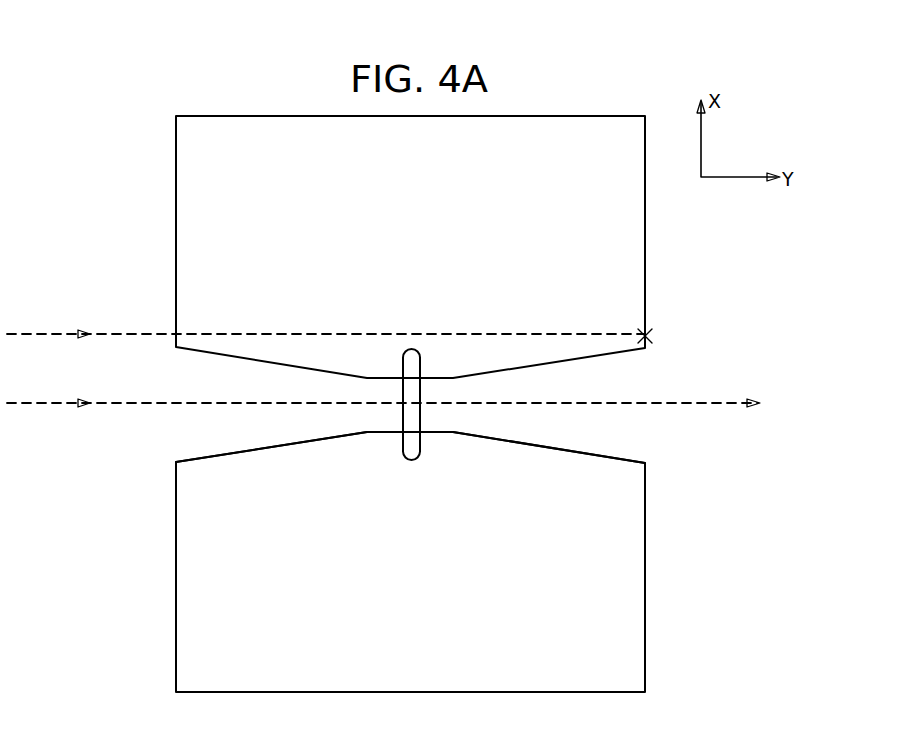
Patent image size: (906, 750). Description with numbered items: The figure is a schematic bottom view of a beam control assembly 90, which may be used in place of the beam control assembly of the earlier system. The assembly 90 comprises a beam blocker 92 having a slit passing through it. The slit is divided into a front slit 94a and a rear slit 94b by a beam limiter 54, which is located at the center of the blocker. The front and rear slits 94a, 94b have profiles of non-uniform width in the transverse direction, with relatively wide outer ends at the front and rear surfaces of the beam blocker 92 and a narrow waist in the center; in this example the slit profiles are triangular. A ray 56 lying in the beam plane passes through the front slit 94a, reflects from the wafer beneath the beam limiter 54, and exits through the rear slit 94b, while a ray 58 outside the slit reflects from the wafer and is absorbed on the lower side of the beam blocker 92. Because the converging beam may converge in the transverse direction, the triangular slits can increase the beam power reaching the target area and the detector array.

The beam control assembly 90 is at (150, 70).
The beam blocker 92 is at (175, 558).
The front slit 94a is at (210, 428).
The rear slit 94b is at (613, 435).
The beam limiter 54 is at (419, 414).
The ray 56 is at (125, 405).
The ray 58 is at (137, 333).